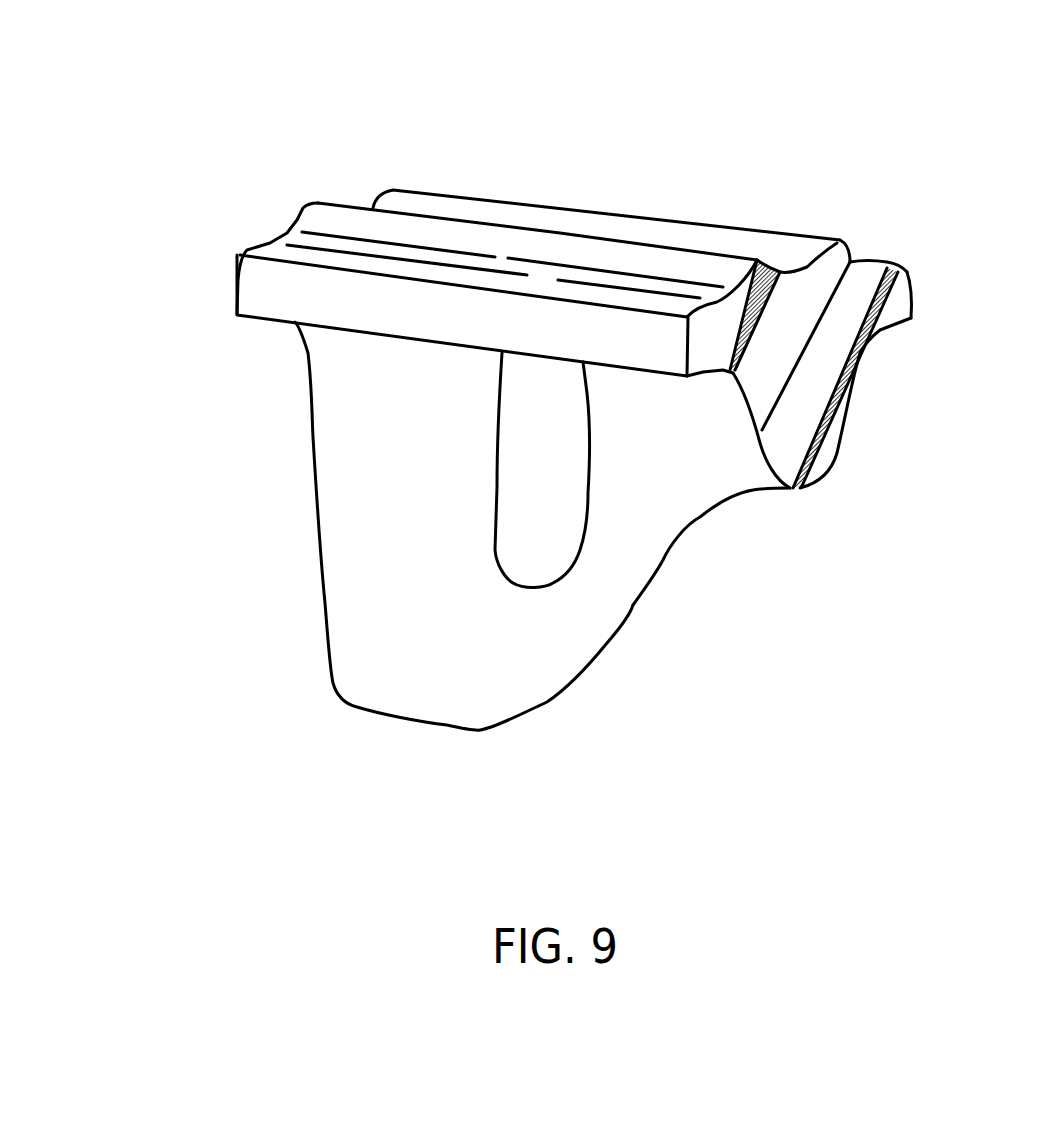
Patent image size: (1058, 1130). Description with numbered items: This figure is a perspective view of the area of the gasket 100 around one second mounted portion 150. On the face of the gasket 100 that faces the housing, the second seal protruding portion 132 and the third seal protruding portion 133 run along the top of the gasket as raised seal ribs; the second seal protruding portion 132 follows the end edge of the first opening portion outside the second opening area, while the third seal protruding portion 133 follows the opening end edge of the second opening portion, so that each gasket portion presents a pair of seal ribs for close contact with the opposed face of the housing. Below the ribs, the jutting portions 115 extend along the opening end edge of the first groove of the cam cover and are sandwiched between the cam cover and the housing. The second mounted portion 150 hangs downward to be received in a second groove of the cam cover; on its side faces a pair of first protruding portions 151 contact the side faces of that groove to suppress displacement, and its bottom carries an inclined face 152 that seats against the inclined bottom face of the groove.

The gasket 100 is at (173, 598).
The jutting portions 115 is at (260, 295).
The second seal protruding portion 132 is at (337, 202).
The third seal protruding portion 133 is at (793, 233).
The second mounted portion 150 is at (337, 450).
The first protruding portions 151 is at (557, 517).
The inclined face 152 is at (630, 620).